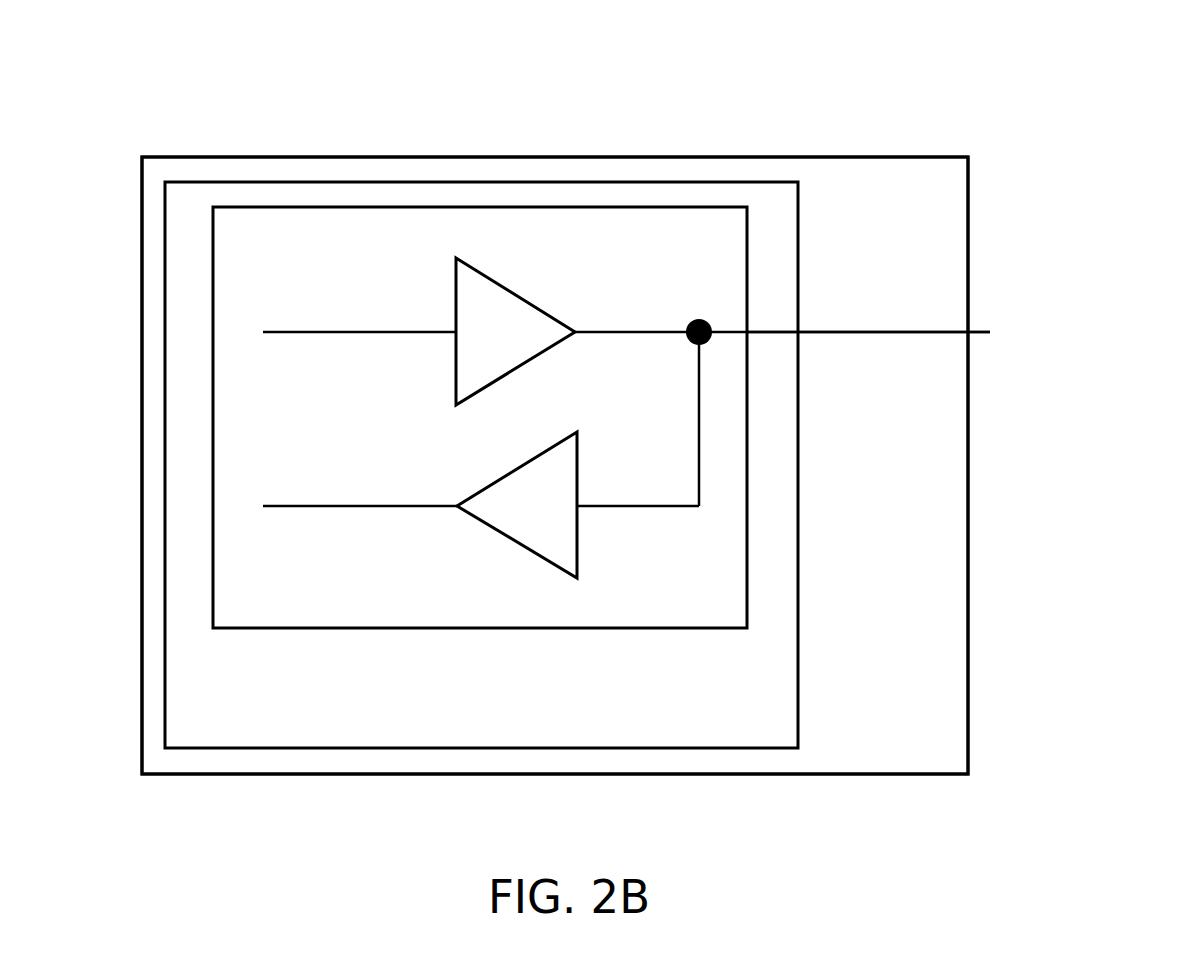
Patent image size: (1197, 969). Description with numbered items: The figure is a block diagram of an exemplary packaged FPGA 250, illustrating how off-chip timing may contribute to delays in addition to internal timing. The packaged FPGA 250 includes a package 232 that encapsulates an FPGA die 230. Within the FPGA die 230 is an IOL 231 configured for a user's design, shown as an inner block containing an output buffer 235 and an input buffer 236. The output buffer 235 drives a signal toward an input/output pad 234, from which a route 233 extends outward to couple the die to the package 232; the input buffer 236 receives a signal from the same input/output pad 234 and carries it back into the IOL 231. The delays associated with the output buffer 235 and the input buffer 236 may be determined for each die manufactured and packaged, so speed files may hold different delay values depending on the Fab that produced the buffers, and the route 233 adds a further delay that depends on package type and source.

The packaged FPGA 250 is at (1003, 147).
The package 232 is at (933, 764).
The FPGA die 230 is at (255, 739).
The IOL 231 is at (278, 617).
The output buffer 235 is at (454, 287).
The input/output pad 234 is at (707, 320).
The route 233 is at (845, 335).
The input buffer 236 is at (487, 487).